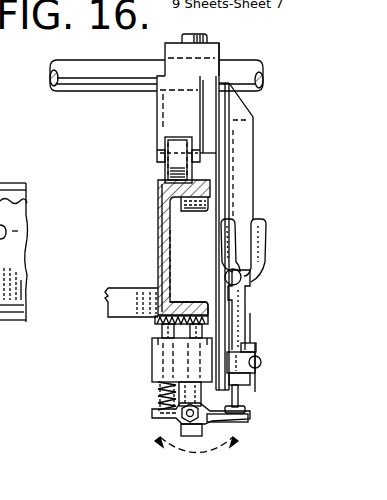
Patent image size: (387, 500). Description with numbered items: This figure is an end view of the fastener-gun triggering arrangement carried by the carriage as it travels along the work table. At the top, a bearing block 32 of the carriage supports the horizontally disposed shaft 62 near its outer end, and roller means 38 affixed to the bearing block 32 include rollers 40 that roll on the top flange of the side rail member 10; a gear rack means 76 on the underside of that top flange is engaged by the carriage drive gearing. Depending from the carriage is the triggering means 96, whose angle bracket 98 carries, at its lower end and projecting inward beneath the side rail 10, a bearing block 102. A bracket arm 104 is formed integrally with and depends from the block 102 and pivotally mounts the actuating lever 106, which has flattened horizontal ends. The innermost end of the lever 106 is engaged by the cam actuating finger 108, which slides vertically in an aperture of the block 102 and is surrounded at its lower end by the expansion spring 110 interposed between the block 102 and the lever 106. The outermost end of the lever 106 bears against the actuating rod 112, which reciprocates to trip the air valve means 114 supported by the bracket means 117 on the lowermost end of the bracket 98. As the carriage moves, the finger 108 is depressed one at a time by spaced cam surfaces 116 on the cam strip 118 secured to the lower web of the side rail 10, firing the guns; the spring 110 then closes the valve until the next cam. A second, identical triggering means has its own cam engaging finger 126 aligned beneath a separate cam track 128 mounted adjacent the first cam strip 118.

The side rail member 10 is at (158, 181).
The bearing block 32 is at (222, 57).
The roller means 38 is at (163, 115).
The roller 40 is at (178, 143).
The horizontally disposed shaft 62 is at (90, 75).
The gear rack means 76 is at (182, 201).
The triggering means 96 is at (267, 337).
The angle bracket 98 is at (218, 168).
The bearing block 102 is at (153, 360).
The bracket arm 104 is at (183, 395).
The actuating lever 106 is at (180, 418).
The cam actuating finger 108 is at (160, 336).
The expansion spring 110 is at (162, 393).
The actuating rod 112 is at (238, 398).
The air valve means 114 is at (232, 350).
The cam surface 116 is at (158, 322).
The bracket means 117 is at (232, 352).
The cam strip 118 is at (158, 308).
The cam engaging finger 126 is at (203, 304).
The cam track 128 is at (188, 315).